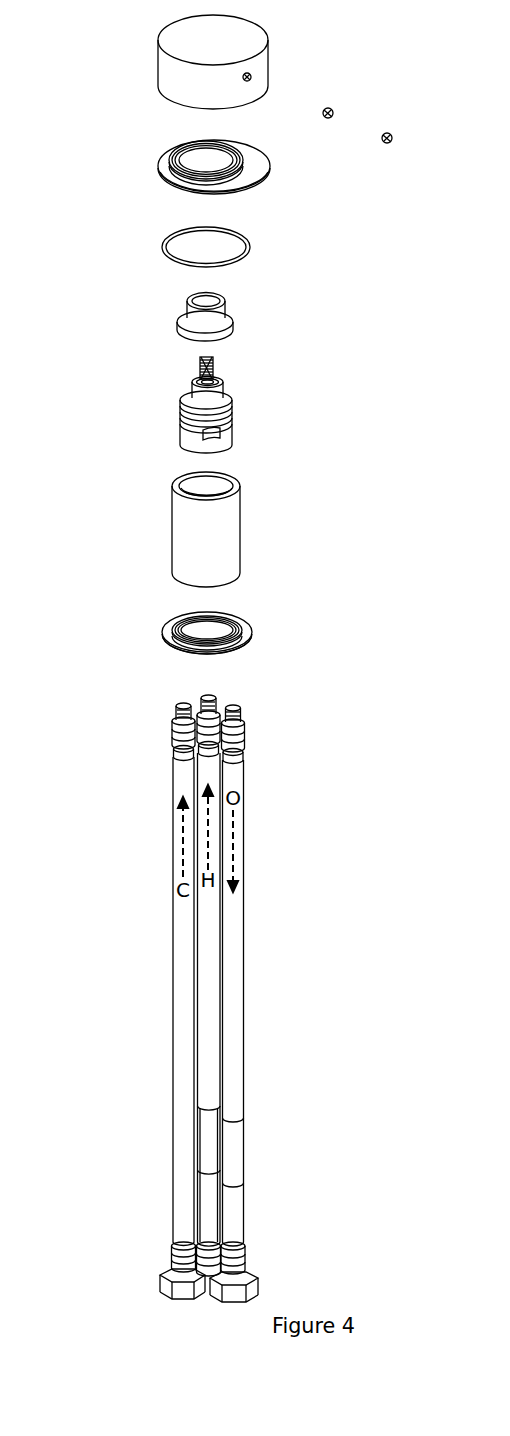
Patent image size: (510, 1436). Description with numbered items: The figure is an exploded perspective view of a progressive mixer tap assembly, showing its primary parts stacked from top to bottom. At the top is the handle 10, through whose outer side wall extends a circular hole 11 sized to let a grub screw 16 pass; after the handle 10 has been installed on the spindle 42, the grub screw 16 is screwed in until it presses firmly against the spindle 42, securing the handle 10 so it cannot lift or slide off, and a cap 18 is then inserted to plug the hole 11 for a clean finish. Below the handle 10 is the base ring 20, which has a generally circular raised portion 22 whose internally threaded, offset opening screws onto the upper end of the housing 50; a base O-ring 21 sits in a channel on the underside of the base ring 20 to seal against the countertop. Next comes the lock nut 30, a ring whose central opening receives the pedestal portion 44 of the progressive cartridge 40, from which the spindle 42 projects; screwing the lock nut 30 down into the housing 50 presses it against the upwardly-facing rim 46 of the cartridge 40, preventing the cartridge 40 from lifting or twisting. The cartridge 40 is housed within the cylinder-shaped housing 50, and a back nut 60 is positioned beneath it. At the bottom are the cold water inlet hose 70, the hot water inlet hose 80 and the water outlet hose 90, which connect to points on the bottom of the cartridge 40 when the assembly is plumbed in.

The handle 10 is at (175, 77).
The hole 11 is at (250, 79).
The grub screw 16 is at (327, 107).
The cap 18 is at (392, 145).
The base ring 20 is at (168, 163).
The base O-ring 21 is at (183, 230).
The raised portion 22 is at (220, 175).
The lock nut 30 is at (202, 297).
The progressive cartridge 40 is at (193, 432).
The spindle 42 is at (212, 363).
The pedestal portion 44 is at (218, 390).
The rim 46 is at (230, 401).
The housing 50 is at (187, 536).
The back nut 60 is at (168, 632).
The cold water inlet hose 70 is at (183, 1077).
The hot water inlet hose 80 is at (212, 987).
The water outlet hose 90 is at (232, 990).